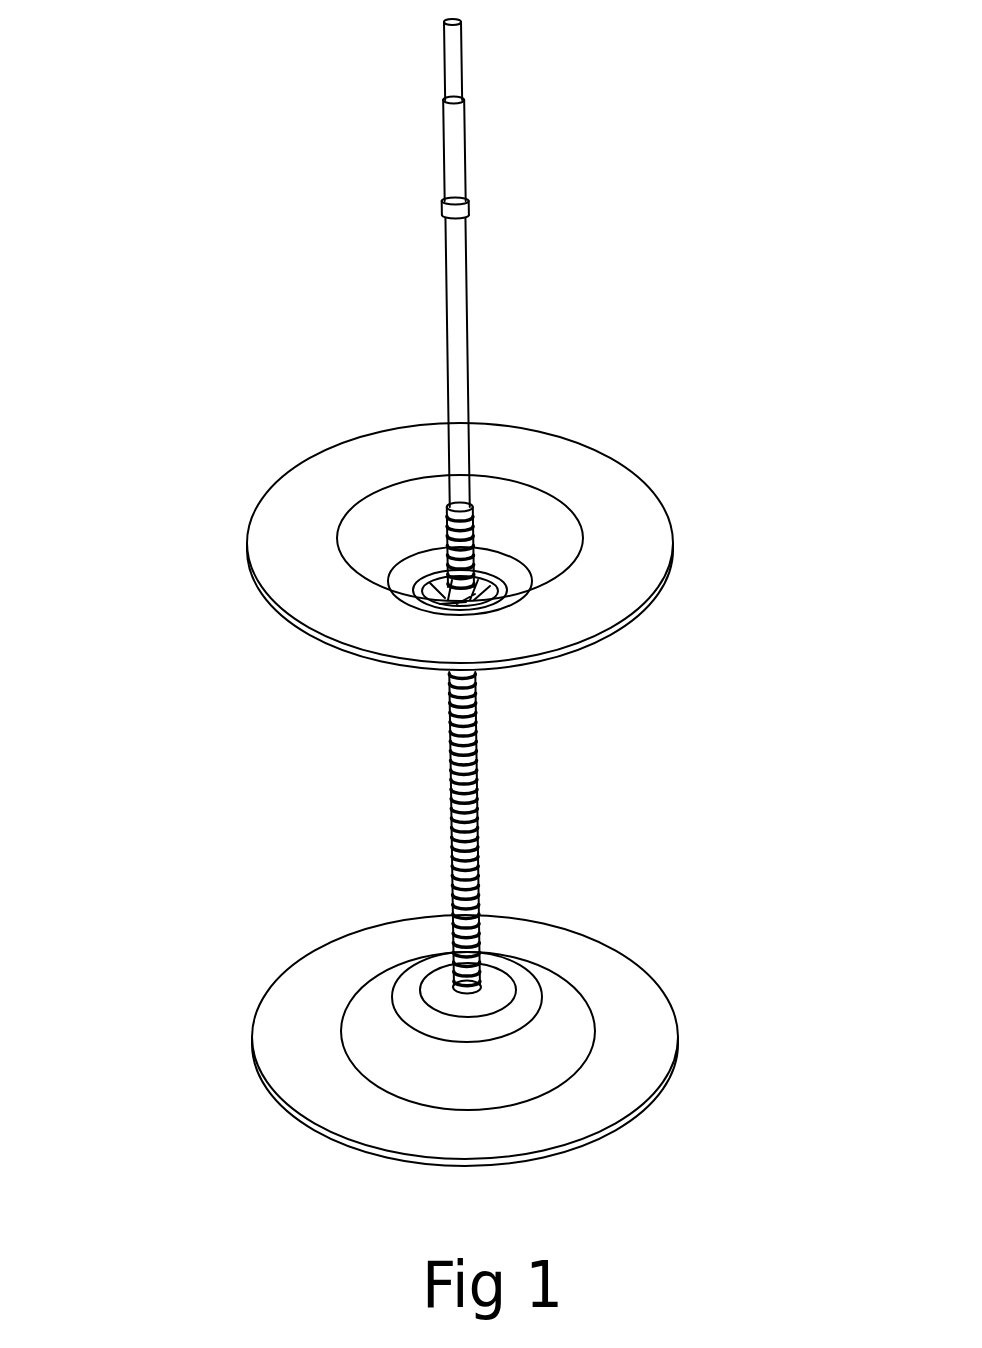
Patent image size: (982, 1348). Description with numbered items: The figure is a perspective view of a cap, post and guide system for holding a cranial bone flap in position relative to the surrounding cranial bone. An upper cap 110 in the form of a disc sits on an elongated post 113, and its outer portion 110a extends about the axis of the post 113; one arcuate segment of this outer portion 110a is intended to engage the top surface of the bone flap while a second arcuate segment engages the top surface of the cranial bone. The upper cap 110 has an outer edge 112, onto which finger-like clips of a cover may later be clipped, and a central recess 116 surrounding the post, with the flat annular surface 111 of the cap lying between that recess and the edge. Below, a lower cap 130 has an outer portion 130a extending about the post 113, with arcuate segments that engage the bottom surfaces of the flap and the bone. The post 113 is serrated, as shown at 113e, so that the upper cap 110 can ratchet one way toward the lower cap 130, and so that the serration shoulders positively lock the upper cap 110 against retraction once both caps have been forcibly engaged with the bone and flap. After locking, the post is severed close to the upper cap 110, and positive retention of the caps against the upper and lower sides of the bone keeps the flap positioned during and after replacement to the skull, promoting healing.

The upper cap 110 is at (467, 474).
The outer portion of upper cap 110a is at (622, 530).
The flat annular portion of upper plate 111 is at (582, 471).
The outer edge of cap 112 is at (355, 438).
The conical recess with nut 116 is at (388, 536).
The post 113 is at (457, 506).
The serrations 113e is at (432, 778).
The lower cap 130 is at (554, 1062).
The outer portion of lower cap 130a is at (592, 1103).